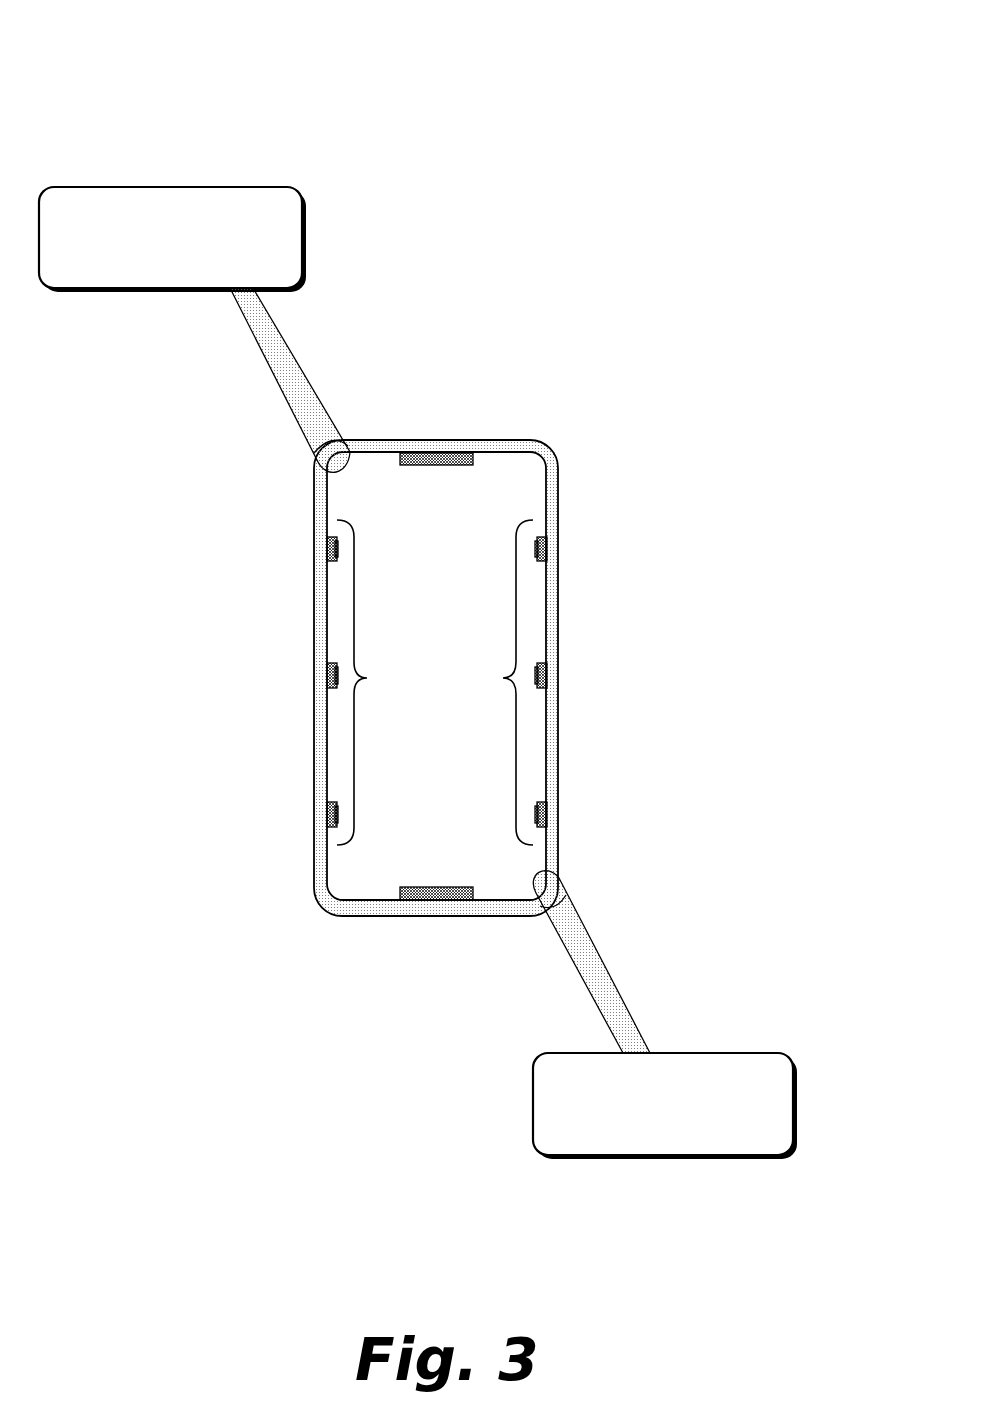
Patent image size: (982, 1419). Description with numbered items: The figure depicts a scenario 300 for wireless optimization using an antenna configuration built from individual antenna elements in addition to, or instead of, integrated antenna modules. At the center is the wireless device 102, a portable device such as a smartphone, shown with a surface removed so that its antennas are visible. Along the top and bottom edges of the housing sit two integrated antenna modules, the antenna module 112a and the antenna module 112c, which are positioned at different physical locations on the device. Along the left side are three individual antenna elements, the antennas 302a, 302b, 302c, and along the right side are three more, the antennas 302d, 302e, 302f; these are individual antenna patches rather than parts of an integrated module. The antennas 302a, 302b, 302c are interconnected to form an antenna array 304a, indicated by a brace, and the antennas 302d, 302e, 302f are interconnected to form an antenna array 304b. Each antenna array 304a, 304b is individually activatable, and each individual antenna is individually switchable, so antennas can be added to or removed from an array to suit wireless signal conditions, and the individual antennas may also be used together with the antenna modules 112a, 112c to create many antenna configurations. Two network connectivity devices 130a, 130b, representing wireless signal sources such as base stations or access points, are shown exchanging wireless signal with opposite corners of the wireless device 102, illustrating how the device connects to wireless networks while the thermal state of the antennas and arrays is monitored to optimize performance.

The scenario 300 is at (730, 81).
The wireless computing device 102 is at (548, 456).
The antenna module 112a is at (436, 455).
The antenna module 112c is at (440, 893).
The antenna 302a is at (327, 540).
The antenna 302b is at (327, 666).
The antenna 302c is at (327, 805).
The antenna 302d is at (547, 540).
The antenna 302e is at (547, 666).
The antenna 302f is at (547, 805).
The antenna array 304a is at (381, 682).
The antenna array 304b is at (490, 682).
The network connectivity device 130a is at (194, 329).
The network connectivity device 130b is at (665, 1015).